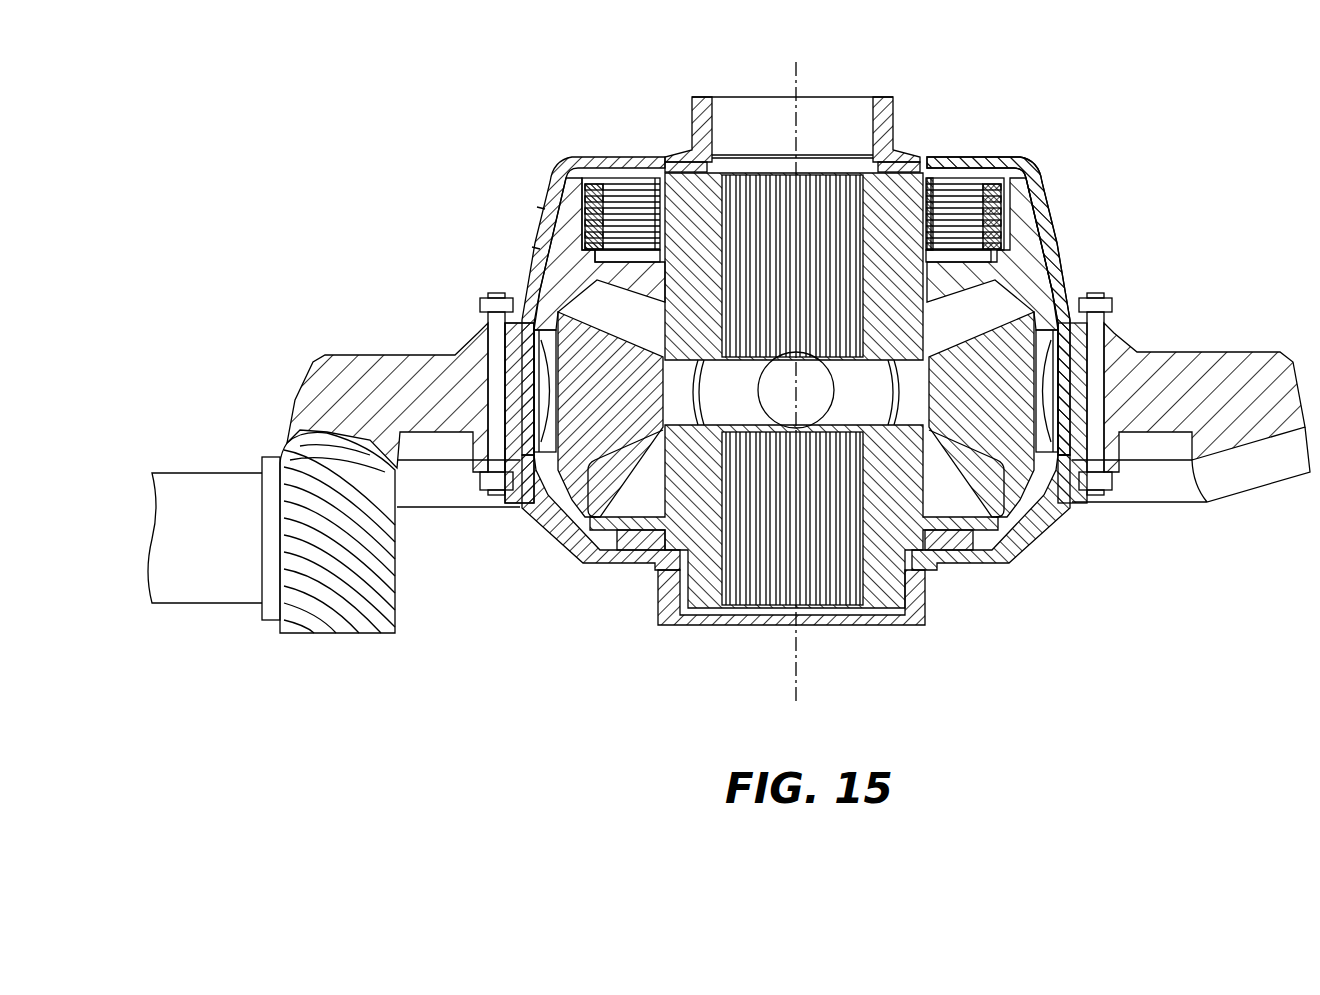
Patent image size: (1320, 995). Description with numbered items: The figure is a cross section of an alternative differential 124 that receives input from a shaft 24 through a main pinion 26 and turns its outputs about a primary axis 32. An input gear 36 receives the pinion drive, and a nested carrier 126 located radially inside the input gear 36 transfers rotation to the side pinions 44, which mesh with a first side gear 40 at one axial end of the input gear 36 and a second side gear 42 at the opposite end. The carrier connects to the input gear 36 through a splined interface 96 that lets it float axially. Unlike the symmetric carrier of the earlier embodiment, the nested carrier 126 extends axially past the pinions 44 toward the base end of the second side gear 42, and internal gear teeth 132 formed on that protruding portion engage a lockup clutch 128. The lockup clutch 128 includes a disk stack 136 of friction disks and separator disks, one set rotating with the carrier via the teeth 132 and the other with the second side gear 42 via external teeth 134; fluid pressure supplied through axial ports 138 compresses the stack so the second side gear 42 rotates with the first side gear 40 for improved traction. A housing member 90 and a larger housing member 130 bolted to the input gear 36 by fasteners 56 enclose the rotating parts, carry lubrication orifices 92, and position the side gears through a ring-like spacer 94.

The shaft 24 is at (214, 538).
The main pinion 26 is at (337, 532).
The primary axis 32 is at (800, 705).
The input gear 36 is at (403, 415).
The first side gear 40 is at (796, 516).
The second side gear 42 is at (794, 266).
The side pinions 44 is at (796, 414).
The fasteners 56 is at (490, 335).
The housing member 90 is at (1015, 553).
The orifices 92 is at (545, 210).
The spacer 94 is at (908, 162).
The splined interface 96 is at (514, 440).
The differential 124 is at (1229, 572).
The nested carrier 126 is at (1035, 290).
The lockup clutch 128 is at (1048, 165).
The housing member 130 is at (885, 97).
The internal gear teeth 132 is at (982, 182).
The external teeth 134 is at (931, 190).
The disk stack 136 is at (634, 195).
The axial ports 138 is at (593, 168).